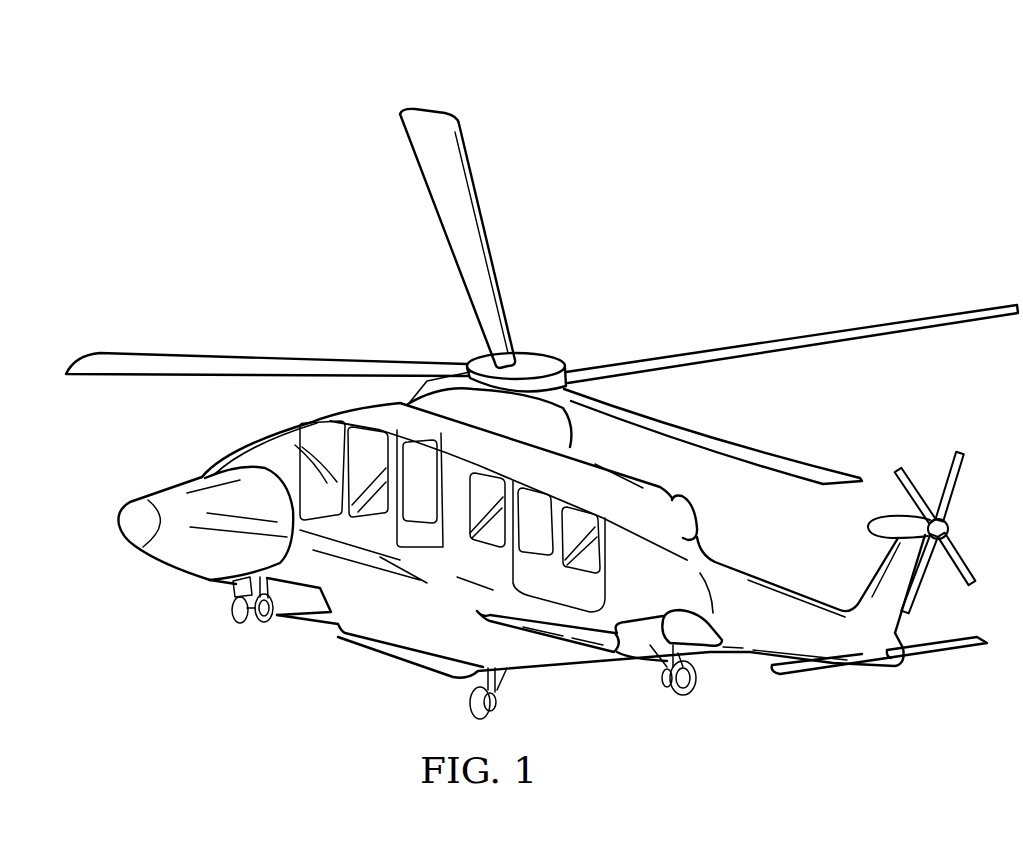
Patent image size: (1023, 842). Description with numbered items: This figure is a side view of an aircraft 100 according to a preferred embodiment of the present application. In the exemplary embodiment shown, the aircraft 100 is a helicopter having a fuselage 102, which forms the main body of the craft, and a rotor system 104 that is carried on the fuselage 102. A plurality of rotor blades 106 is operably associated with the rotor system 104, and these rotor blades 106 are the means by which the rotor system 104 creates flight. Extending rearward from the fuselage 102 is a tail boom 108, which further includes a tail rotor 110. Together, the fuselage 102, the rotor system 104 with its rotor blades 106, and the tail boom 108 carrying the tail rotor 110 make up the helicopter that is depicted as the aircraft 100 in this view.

The aircraft 100 is at (206, 92).
The fuselage 102 is at (338, 618).
The rotor system 104 is at (558, 325).
The rotor blades 106 is at (773, 350).
The tail boom 108 is at (750, 647).
The tail rotor 110 is at (955, 498).